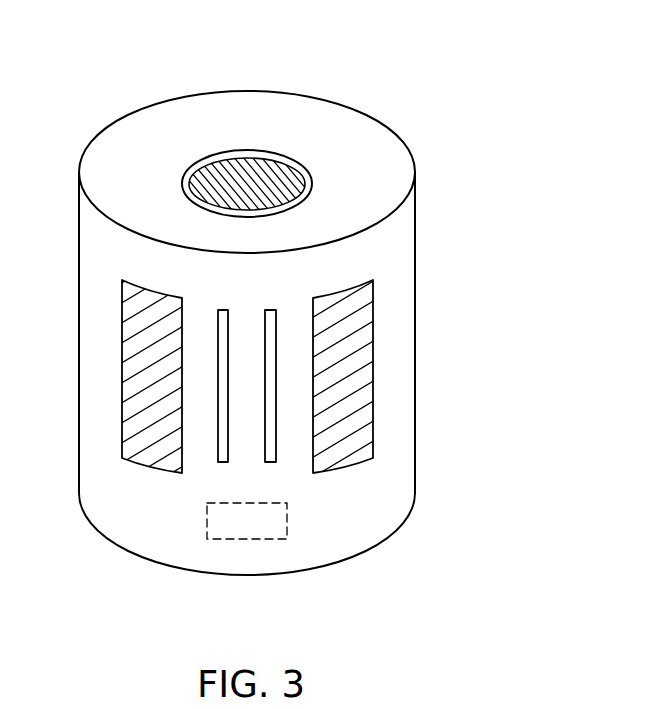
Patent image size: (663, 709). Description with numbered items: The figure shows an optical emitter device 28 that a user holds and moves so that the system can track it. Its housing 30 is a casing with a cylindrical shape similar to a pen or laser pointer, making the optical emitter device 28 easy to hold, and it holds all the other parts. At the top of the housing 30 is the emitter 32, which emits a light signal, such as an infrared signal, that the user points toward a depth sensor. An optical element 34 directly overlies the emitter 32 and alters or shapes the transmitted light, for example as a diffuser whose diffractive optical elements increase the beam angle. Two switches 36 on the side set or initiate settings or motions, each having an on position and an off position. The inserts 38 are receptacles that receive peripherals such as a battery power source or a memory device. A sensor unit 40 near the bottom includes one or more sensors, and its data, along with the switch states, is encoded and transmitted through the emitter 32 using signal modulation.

The optical emitter device 28 is at (519, 134).
The housing 30 is at (352, 521).
The emitter 32 is at (243, 146).
The optical element 34 is at (268, 162).
The switches 36 is at (130, 357).
The inserts 38 is at (218, 422).
The sensor unit 40 is at (207, 530).